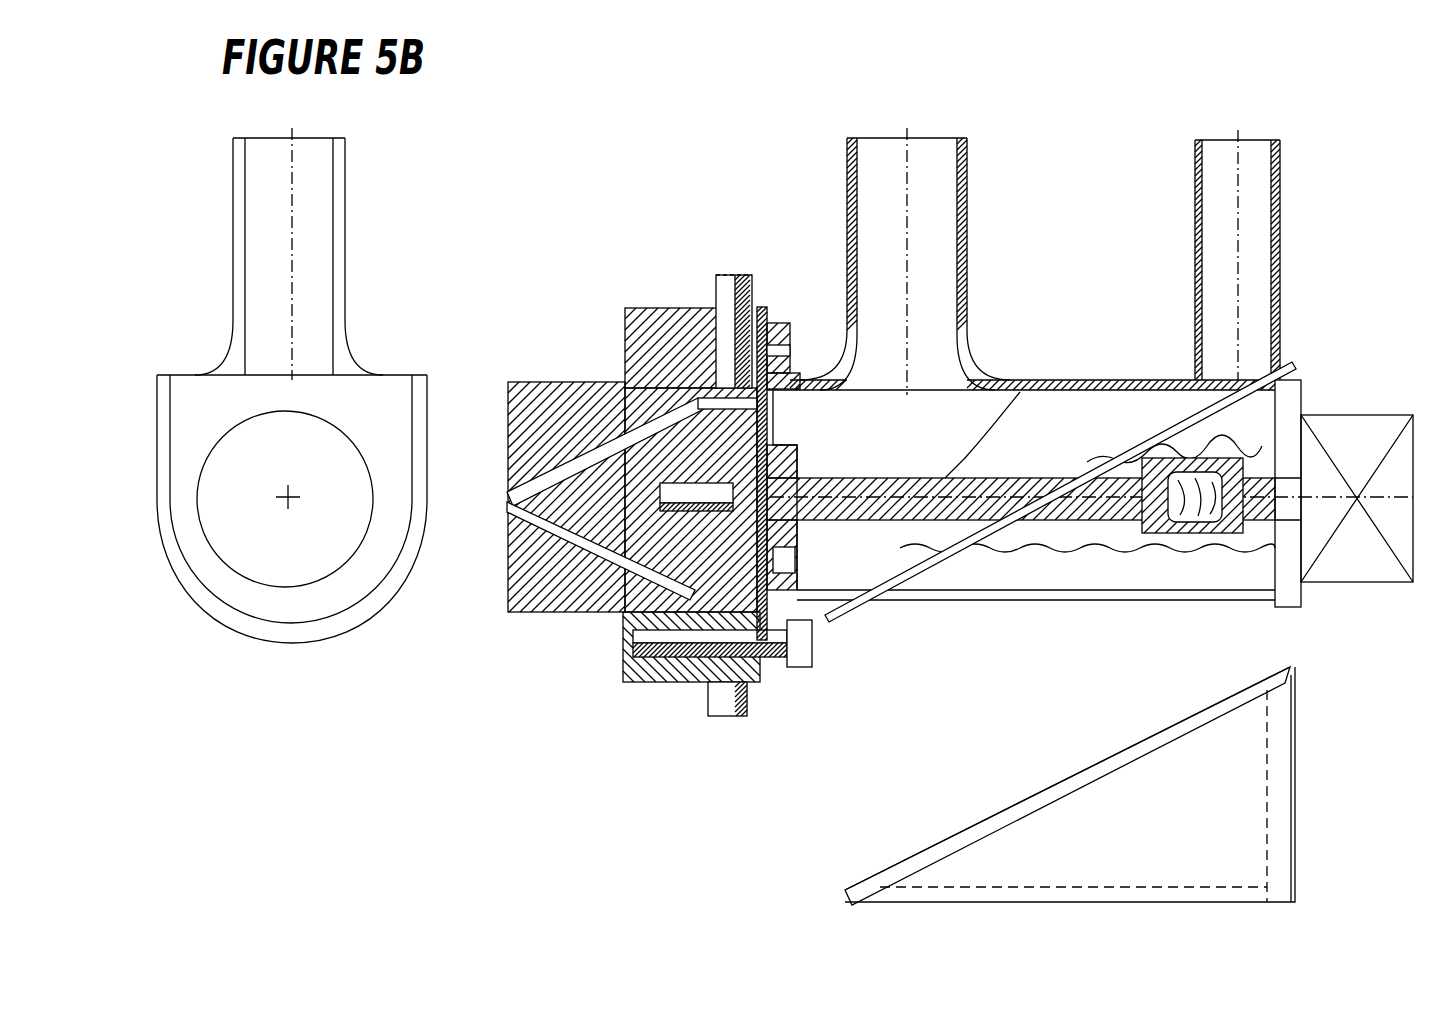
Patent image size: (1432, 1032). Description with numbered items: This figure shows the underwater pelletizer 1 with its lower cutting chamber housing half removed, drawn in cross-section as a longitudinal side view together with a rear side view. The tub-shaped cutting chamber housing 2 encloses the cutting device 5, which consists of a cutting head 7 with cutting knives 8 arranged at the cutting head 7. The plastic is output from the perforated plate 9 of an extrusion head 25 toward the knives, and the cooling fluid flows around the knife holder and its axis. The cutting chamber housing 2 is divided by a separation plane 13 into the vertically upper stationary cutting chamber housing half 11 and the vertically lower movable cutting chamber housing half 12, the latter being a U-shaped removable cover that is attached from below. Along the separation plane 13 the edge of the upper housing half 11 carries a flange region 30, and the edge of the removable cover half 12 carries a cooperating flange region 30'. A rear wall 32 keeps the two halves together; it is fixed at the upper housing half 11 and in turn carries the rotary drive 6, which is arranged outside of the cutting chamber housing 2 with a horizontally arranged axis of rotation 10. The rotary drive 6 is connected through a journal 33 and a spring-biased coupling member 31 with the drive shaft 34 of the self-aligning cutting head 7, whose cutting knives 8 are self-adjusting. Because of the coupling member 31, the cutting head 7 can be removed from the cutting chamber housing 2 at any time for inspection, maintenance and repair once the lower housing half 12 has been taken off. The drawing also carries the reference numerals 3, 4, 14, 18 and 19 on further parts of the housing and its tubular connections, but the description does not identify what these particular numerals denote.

The underwater pelletizer 1 is at (1312, 150).
The cutting chamber housing 2 is at (1290, 362).
The connection tube 3 is at (330, 220).
The connection tube 4 is at (945, 228).
The cutting device 5 is at (810, 470).
The rotary drive 6 is at (316, 553).
The cutting head 7 is at (797, 540).
The cutting knives 8 is at (800, 412).
The perforated plate 9 is at (698, 308).
The axis of rotation 10 is at (970, 490).
The upper stationary cutting chamber housing half 11 is at (1013, 392).
The lower movable cutting chamber housing half 12 is at (1297, 802).
The separation plane 13 is at (1090, 466).
The wall 14 is at (1125, 440).
The flange 18 is at (164, 466).
The inner wall 19 is at (413, 468).
The extrusion head 25 is at (582, 595).
The flange region 30 is at (854, 492).
The flange region 30' is at (1067, 778).
The spring-biased coupling member 31 is at (1157, 540).
The rear wall 32 is at (405, 428).
The journal 33 is at (1288, 476).
The drive shaft 34 is at (1070, 540).